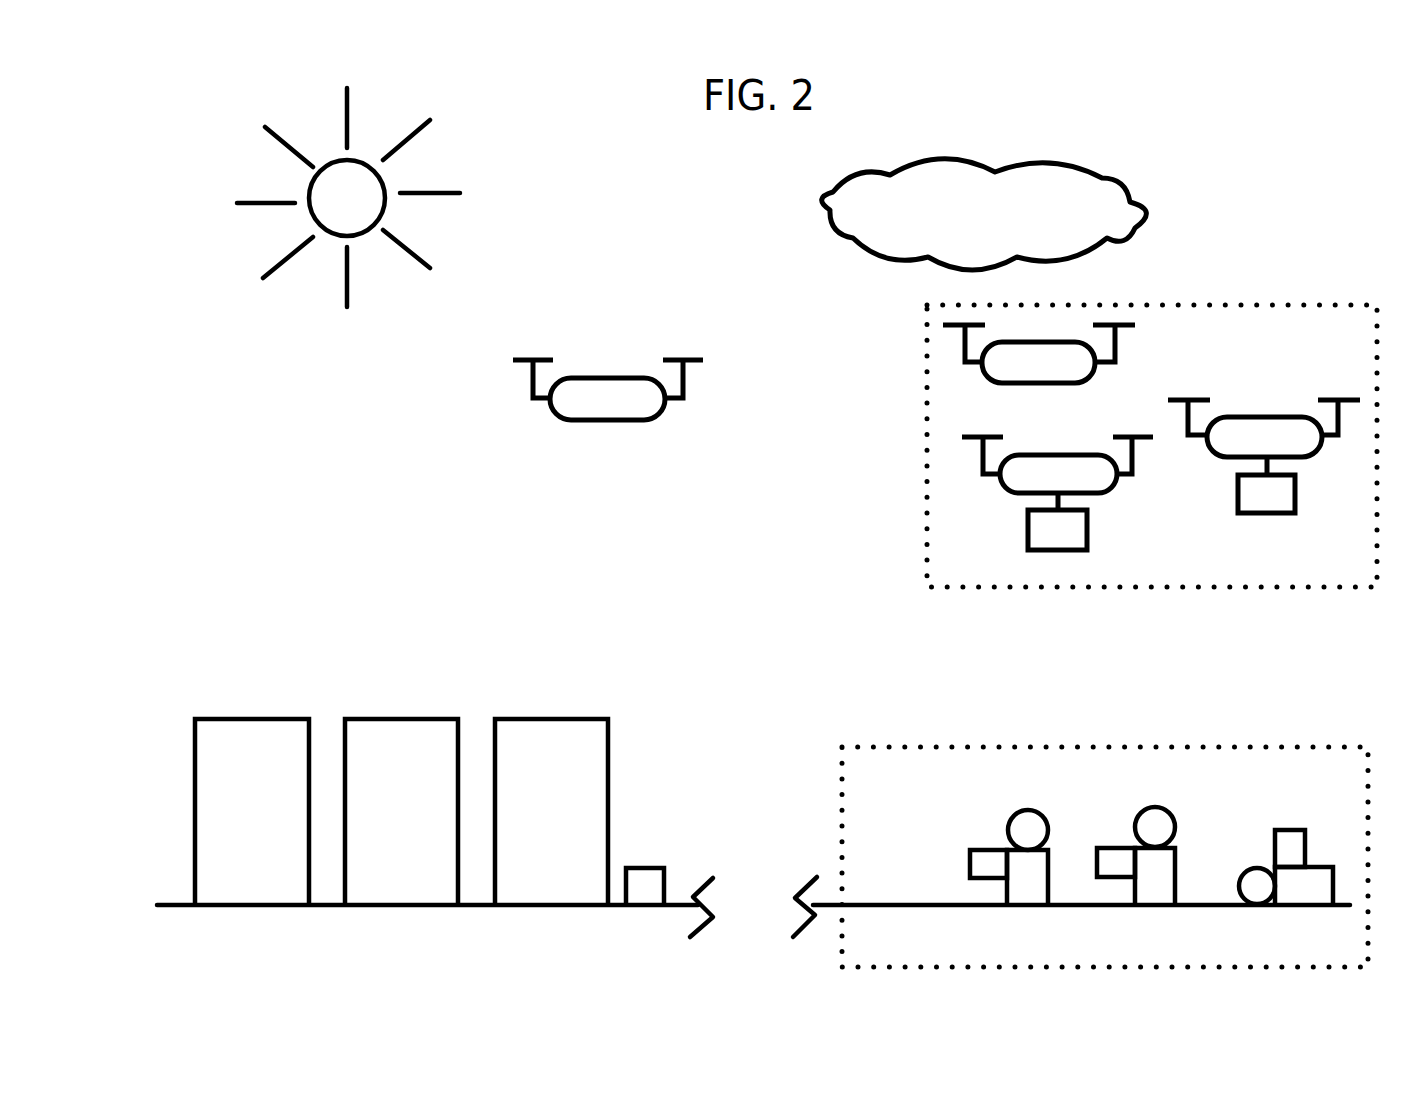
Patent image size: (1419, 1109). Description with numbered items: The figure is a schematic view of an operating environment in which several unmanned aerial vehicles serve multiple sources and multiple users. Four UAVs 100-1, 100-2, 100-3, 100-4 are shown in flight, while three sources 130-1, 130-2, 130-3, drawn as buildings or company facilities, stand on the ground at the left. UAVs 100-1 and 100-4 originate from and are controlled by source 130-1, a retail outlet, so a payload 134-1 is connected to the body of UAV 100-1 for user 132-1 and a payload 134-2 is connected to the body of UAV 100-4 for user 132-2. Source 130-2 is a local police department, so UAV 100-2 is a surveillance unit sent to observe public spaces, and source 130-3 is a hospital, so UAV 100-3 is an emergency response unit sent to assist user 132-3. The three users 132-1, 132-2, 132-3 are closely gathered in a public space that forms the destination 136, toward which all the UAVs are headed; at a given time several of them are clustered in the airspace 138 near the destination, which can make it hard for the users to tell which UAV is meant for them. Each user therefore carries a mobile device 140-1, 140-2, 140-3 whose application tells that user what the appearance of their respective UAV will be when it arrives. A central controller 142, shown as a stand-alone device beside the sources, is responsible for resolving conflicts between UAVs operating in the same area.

The UAV 100-1 is at (1058, 455).
The UAV 100-2 is at (1038, 342).
The UAV 100-3 is at (608, 378).
The UAV 100-4 is at (1265, 417).
The source 130-1 is at (253, 718).
The source 130-2 is at (403, 718).
The source 130-3 is at (552, 718).
The user 132-1 is at (1025, 810).
The user 132-2 is at (1152, 810).
The user 132-3 is at (1240, 887).
The payload 134-1 is at (1057, 550).
The payload 134-2 is at (1263, 513).
The destination 136 is at (1123, 745).
The airspace 138 is at (1222, 302).
The mobile device 140-1 is at (988, 880).
The mobile device 140-2 is at (1117, 878).
The mobile device 140-3 is at (1290, 830).
The central controller 142 is at (647, 867).